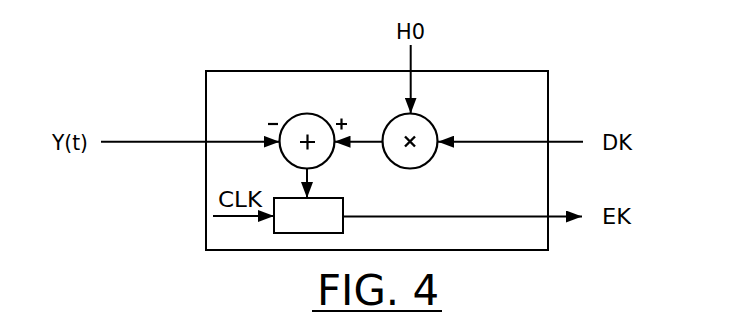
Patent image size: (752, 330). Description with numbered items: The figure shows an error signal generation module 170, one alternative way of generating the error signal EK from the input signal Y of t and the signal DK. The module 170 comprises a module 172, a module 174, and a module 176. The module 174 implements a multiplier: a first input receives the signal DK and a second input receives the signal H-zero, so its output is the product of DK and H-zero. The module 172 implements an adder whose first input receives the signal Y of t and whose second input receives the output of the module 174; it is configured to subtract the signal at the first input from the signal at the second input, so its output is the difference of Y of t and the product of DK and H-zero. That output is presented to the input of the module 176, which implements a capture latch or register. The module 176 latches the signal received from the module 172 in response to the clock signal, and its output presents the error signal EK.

The module 170 is at (308, 71).
The module 172 is at (308, 113).
The module 174 is at (410, 170).
The module 176 is at (325, 197).